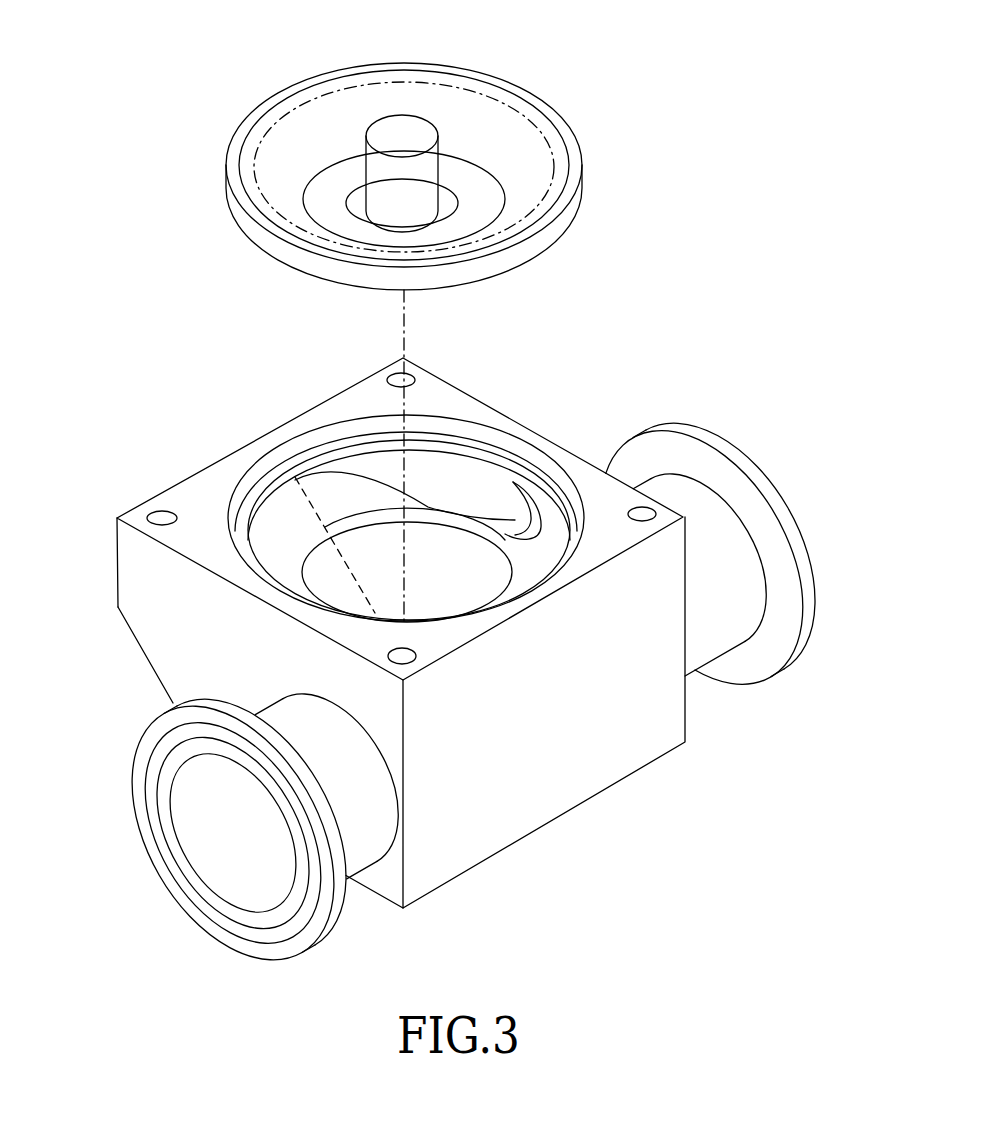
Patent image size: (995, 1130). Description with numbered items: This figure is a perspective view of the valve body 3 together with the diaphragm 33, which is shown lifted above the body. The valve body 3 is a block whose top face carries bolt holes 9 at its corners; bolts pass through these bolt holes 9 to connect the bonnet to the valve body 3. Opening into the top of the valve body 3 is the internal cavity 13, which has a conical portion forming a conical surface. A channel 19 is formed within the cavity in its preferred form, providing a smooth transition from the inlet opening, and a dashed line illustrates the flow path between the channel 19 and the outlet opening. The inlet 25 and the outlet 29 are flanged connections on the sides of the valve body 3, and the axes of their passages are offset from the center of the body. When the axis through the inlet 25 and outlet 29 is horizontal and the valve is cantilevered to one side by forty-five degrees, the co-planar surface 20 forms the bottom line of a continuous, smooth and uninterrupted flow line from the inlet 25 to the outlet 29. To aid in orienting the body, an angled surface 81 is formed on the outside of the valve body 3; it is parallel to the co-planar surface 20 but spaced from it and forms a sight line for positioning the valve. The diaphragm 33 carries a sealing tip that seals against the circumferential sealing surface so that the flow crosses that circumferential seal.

The valve body 3 is at (602, 765).
The bolt holes 9 is at (408, 377).
The internal cavity 13 is at (378, 583).
The channel 19 is at (489, 498).
The co-planar surface 20 is at (337, 487).
The inlet 25 is at (785, 508).
The outlet 29 is at (203, 833).
The diaphragm 33 is at (533, 145).
The angled surface 81 is at (143, 657).